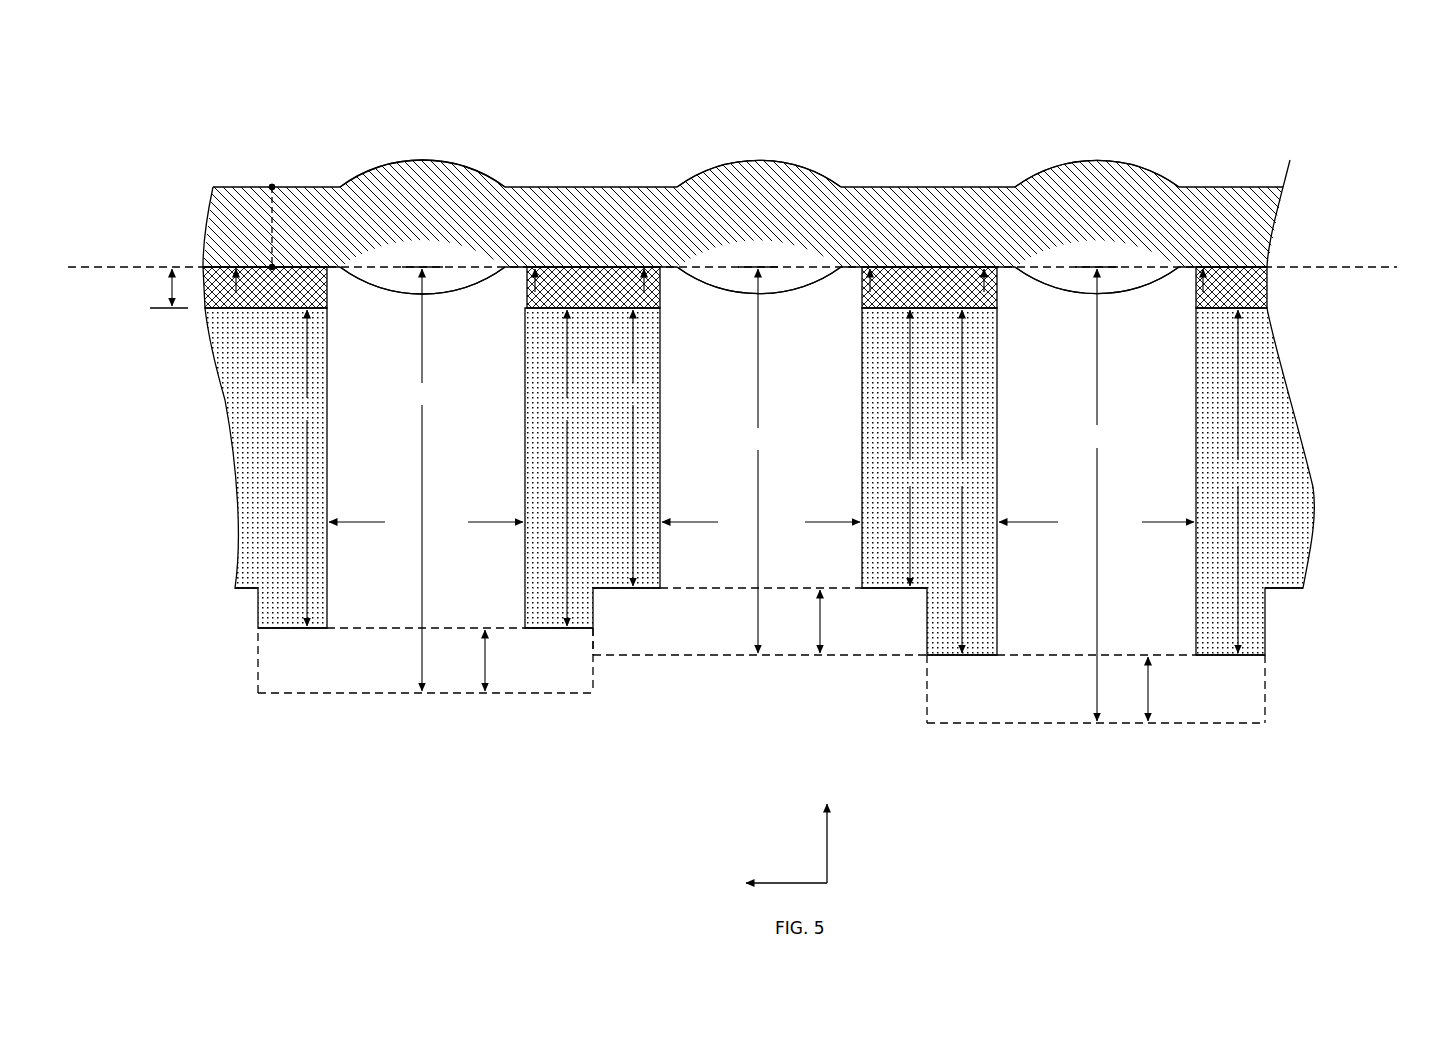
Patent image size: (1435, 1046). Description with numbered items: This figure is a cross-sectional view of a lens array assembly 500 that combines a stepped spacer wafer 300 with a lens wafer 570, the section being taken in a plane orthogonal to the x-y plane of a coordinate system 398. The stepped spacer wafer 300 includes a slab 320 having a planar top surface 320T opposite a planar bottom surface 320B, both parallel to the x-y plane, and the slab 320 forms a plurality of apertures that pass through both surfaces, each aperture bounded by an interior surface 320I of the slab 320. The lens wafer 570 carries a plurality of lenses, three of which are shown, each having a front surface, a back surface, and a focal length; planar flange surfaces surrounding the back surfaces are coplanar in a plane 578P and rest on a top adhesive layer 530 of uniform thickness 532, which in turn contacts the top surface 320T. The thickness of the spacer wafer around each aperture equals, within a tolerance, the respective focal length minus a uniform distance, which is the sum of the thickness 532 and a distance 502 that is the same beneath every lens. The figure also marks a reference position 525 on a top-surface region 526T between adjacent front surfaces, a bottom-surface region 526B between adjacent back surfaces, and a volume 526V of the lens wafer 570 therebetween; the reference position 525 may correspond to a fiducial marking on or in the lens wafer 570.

The lens wafer 570 is at (746, 213).
The plane 578P is at (111, 266).
The top adhesive layer 530 is at (735, 287).
The uniform thickness 532 is at (165, 293).
The slab 320 is at (759, 481).
The top surface 320T is at (310, 297).
The bottom surface 320B is at (246, 592).
The interior surface 320I is at (452, 512).
The distance 502 is at (483, 672).
The reference position 525 is at (270, 180).
The top-surface region 526T is at (270, 180).
The volume 526V is at (264, 205).
The bottom-surface region 526B is at (271, 270).
The stepped spacer wafer 300 is at (183, 442).
The lens array assembly 500 is at (255, 804).
The coordinate system 398 is at (771, 820).